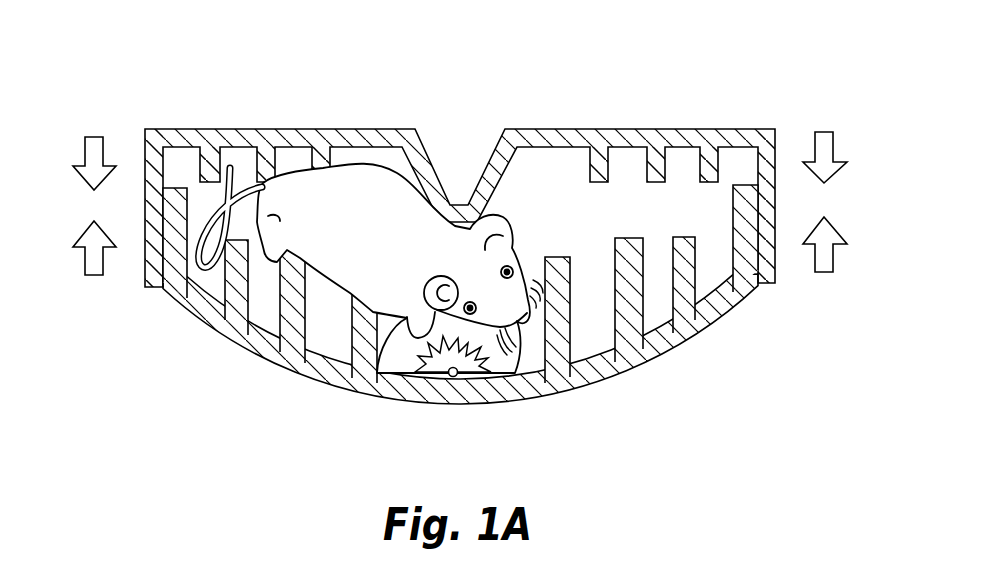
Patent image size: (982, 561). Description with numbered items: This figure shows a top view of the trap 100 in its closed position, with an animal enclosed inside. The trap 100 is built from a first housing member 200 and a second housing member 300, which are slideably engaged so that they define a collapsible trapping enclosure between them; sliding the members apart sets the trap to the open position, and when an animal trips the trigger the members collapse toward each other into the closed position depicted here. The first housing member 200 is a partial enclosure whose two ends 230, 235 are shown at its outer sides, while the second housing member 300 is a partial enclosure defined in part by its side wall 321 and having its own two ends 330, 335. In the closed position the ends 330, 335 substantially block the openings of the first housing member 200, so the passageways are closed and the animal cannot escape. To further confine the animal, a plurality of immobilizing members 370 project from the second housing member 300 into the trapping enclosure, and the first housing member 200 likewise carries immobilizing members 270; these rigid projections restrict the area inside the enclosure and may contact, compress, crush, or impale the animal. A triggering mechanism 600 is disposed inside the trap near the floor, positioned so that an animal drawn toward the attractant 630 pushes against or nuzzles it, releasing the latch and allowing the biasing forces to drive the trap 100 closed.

The trap 100 is at (292, 89).
The first housing member 200 is at (597, 128).
The end of partial enclosure 230 is at (155, 167).
The end of partial enclosure 235 is at (772, 207).
The immobilizing members 270 is at (213, 155).
The second housing member 300 is at (635, 372).
The side wall 321 is at (320, 365).
The end of partial enclosure 330 is at (172, 283).
The end of partial enclosure 335 is at (757, 287).
The immobilizing members 370 is at (240, 308).
The triggering mechanism 600 is at (520, 375).
The attractant 630 is at (407, 397).